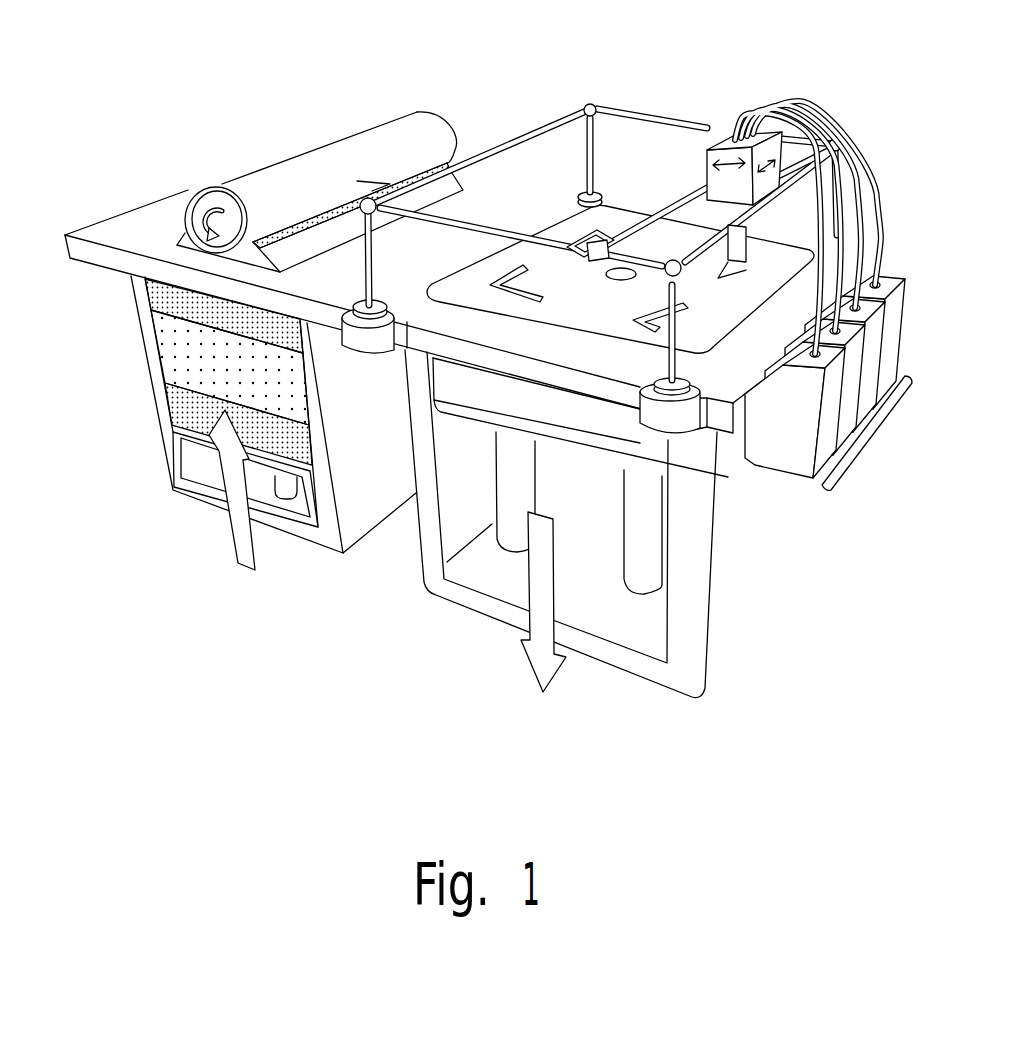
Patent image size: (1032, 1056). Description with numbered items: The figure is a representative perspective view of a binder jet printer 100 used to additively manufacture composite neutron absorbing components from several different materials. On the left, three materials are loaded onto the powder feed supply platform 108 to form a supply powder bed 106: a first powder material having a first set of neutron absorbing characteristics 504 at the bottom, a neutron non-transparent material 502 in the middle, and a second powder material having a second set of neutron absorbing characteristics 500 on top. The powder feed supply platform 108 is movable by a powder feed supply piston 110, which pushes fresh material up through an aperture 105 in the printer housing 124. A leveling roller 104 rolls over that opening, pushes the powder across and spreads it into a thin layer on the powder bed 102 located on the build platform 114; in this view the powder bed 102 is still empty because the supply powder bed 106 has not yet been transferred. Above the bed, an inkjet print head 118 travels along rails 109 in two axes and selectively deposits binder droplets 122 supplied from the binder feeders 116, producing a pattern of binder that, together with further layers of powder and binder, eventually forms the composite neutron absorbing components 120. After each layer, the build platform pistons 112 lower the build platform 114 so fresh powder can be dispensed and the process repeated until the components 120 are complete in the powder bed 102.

The binder jet printer 100 is at (104, 168).
The powder bed 102 is at (537, 228).
The leveling roller 104 is at (333, 140).
The aperture 105 is at (323, 247).
The supply powder bed 106 is at (131, 353).
The powder feed supply platform 108 is at (200, 437).
The rails 109 is at (549, 118).
The powder feed supply piston 110 is at (275, 487).
The build platform pistons 112 is at (627, 569).
The build platform 114 is at (591, 462).
The binder feeders 116 is at (873, 440).
The inkjet print head 118 is at (707, 182).
The composite neutron absorbing components 120 is at (718, 257).
The binder droplets 122 is at (743, 247).
The printer housing 124 is at (97, 232).
The second powder material 500 is at (163, 297).
The neutron non-transparent material 502 is at (183, 365).
The first powder material 504 is at (183, 404).